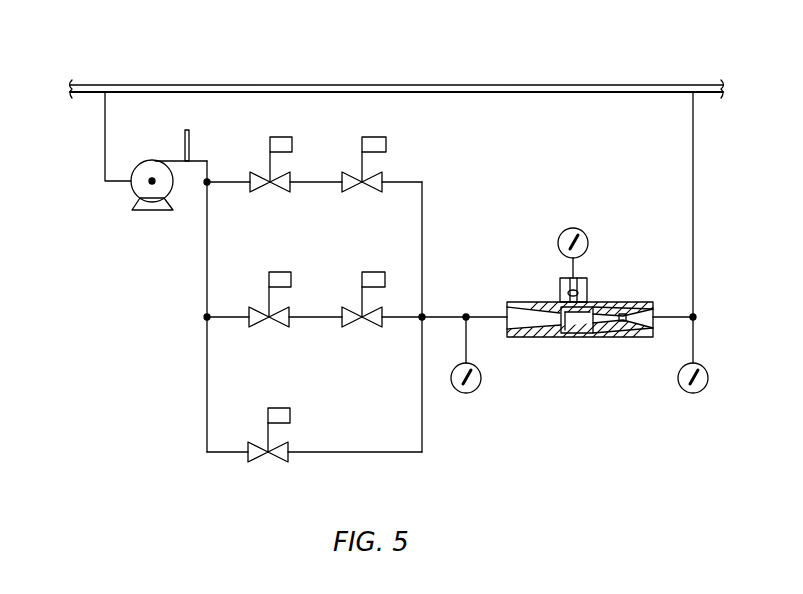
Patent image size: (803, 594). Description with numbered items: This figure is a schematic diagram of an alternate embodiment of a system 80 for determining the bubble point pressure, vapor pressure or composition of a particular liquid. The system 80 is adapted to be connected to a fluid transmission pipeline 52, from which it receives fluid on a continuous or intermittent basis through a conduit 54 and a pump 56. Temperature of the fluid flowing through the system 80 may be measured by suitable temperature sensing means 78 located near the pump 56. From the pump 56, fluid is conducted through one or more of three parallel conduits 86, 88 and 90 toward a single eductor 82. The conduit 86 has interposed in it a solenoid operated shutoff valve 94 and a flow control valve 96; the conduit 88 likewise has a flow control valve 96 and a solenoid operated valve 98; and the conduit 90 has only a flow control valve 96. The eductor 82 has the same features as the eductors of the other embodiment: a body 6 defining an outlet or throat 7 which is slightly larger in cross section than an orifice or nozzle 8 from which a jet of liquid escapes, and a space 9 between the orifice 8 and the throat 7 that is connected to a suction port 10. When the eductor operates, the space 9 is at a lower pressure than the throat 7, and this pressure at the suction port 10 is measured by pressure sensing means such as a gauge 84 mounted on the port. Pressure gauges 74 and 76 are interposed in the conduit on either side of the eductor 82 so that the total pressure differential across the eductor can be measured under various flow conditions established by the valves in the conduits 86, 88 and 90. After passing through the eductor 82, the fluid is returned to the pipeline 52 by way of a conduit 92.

The pipeline 52 is at (488, 85).
The conduit 54 is at (105, 164).
The pump 56 is at (133, 197).
The temperature sensing means 78 is at (185, 138).
The system 80 is at (178, 302).
The conduit 86 is at (312, 185).
The conduit 88 is at (318, 320).
The conduit 90 is at (365, 453).
The flow control valve 96 is at (292, 142).
The solenoid operated shutoff valve 94 is at (387, 143).
The solenoid operated valve 98 is at (377, 272).
The pressure gauge 74 is at (470, 393).
The pressure gauge 76 is at (698, 393).
The conduit 92 is at (695, 205).
The gauge 84 is at (568, 229).
The eductor 82 is at (627, 302).
The body 6 is at (598, 302).
The throat 7 is at (624, 325).
The suction port 10 is at (563, 297).
The space 9 is at (578, 337).
The orifice 8 is at (563, 337).